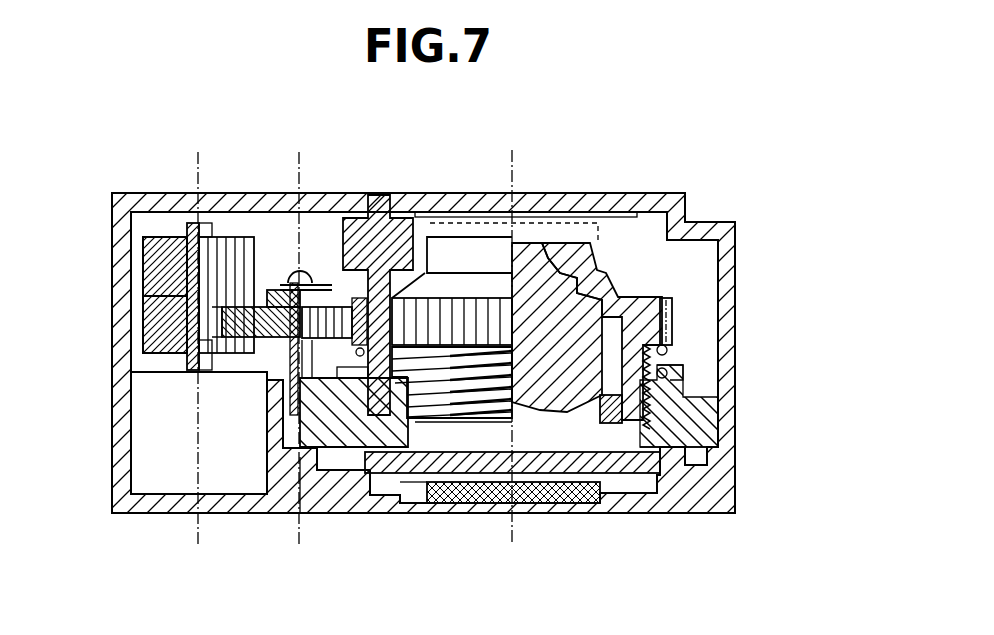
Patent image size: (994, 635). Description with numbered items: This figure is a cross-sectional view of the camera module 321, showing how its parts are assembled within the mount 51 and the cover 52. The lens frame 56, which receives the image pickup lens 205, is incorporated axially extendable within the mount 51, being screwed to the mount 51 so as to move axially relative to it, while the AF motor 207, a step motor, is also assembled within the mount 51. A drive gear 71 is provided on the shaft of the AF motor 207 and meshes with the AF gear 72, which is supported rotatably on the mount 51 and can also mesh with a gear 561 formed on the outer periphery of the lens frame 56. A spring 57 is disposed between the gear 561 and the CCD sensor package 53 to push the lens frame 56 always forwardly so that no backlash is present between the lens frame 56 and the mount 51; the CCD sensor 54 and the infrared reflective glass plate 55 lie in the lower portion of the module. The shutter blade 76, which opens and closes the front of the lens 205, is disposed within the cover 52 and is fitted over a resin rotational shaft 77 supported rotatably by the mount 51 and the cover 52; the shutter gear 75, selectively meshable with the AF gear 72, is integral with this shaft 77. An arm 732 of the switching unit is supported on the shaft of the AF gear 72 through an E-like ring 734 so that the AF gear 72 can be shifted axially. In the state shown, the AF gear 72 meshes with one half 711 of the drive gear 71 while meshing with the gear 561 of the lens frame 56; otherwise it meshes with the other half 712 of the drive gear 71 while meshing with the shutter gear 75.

The camera module 321 is at (464, 340).
The cover 52 is at (673, 193).
The CCD sensor package 53 is at (693, 515).
The mount 51 is at (237, 500).
The AF motor 207 is at (150, 480).
The other half of the drive gear 712 is at (150, 245).
The one half of the drive gear 711 is at (160, 335).
The drive gear 71 is at (222, 195).
The AF gear 72 is at (247, 327).
The E-like ring 734 is at (272, 195).
The arm 732 is at (330, 195).
The shutter gear 75 is at (352, 195).
The lens frame 56 is at (477, 245).
The shutter blade 76 is at (531, 215).
The rotational shaft 77 is at (380, 195).
The image pickup lens 205 is at (548, 287).
The gear 561 is at (672, 322).
The spring 57 is at (657, 377).
The CCD sensor 54 is at (460, 490).
The infrared reflective glass plate 55 is at (620, 497).